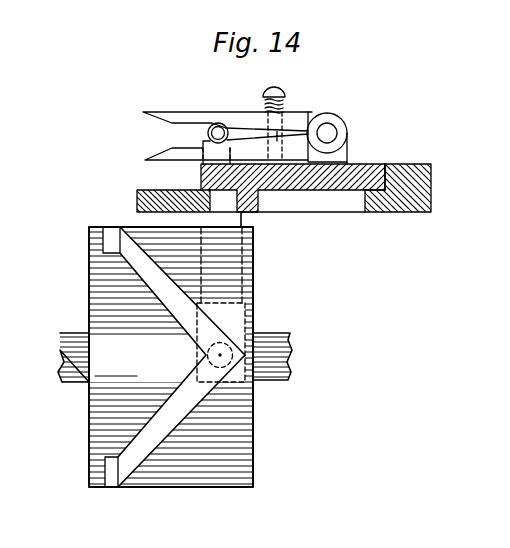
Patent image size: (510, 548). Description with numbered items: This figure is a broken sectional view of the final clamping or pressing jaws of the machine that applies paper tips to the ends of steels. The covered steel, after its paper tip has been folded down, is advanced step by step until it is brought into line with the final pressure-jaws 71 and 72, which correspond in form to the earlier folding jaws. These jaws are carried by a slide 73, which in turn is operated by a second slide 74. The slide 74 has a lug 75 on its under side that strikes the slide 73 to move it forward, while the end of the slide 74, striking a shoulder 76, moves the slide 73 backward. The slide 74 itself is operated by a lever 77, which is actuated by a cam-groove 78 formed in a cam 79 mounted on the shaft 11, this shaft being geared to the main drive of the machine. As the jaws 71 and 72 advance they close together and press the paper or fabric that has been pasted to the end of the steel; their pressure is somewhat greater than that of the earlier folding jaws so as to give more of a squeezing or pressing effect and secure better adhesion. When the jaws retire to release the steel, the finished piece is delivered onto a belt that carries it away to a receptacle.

The shaft 11 is at (268, 343).
The final pressure-jaw 71 is at (190, 115).
The final pressure-jaw 72 is at (186, 156).
The slide 73 is at (397, 163).
The slide 74 is at (360, 163).
The lug 75 is at (259, 203).
The shoulder 76 is at (386, 163).
The lever 77 is at (231, 218).
The cam-groove 78 is at (187, 318).
The cam 79 is at (236, 281).